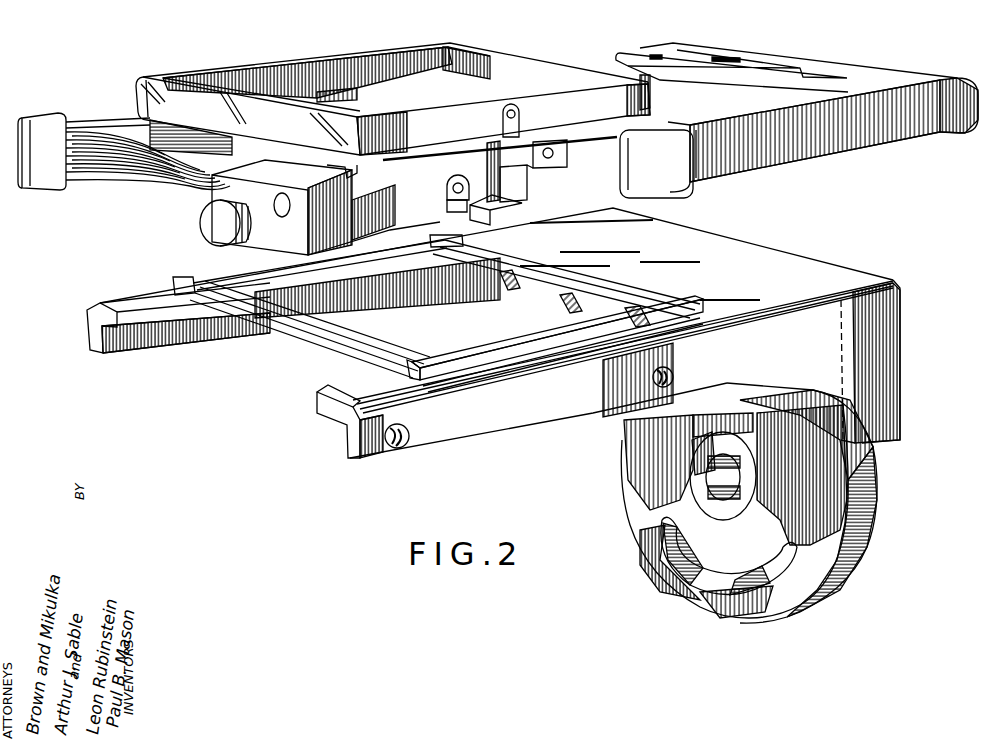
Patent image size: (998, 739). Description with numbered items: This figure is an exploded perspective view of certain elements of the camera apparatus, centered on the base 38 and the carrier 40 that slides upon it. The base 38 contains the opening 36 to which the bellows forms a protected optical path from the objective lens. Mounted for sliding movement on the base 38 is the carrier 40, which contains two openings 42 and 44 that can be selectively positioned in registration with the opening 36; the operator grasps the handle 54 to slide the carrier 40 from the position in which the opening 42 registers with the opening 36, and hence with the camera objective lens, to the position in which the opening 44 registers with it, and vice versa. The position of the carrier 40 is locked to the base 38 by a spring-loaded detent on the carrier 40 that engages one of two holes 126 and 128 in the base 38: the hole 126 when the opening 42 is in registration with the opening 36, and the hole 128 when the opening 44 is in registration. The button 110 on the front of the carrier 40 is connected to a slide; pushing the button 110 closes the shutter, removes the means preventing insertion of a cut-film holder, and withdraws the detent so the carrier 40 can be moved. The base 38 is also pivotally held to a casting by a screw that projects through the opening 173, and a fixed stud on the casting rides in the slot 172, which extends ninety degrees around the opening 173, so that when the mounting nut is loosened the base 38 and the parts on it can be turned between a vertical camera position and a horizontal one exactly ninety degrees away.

The opening 36 is at (403, 333).
The base 38 is at (866, 266).
The carrier 40 is at (926, 143).
The opening 42 is at (357, 107).
The opening 44 is at (668, 92).
The handle 54 is at (156, 186).
The button 110 is at (216, 224).
The hole 126 is at (675, 377).
The hole 128 is at (410, 430).
The slot 172 is at (768, 562).
The opening 173 is at (733, 477).